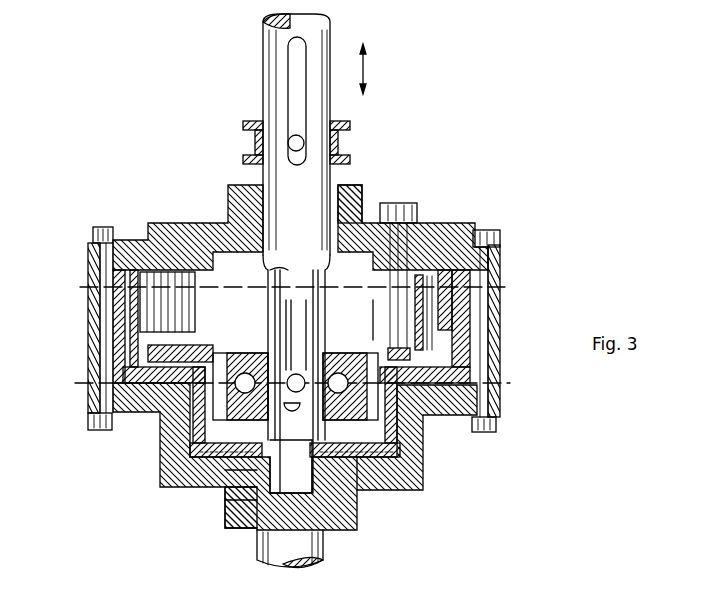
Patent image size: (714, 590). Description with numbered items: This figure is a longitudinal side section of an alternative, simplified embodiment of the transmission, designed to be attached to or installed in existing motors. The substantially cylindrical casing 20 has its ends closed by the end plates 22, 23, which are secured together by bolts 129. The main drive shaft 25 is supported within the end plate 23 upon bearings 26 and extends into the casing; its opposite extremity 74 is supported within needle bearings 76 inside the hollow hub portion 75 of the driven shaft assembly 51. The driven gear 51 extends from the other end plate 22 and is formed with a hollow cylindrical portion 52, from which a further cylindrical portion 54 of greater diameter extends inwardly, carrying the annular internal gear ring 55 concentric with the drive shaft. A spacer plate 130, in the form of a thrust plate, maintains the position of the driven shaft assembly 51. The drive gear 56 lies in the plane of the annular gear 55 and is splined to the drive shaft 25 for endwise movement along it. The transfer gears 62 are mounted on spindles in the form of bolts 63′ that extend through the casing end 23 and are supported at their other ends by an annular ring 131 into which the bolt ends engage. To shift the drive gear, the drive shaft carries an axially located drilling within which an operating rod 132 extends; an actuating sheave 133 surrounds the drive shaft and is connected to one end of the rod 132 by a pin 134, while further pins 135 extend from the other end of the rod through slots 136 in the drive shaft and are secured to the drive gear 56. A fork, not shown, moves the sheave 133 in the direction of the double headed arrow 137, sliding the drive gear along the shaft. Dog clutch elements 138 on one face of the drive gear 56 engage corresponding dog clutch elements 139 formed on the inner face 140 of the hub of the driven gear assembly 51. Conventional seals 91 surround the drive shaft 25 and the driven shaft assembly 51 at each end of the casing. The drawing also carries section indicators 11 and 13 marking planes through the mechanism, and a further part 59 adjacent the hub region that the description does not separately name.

The section line 11- 11 is at (75, 383).
The section line 13- 13 is at (80, 287).
The casing 20 is at (494, 415).
The end plate 22 is at (437, 420).
The end plate 23 is at (445, 250).
The main drive shaft 25 is at (263, 100).
The bearings 26 is at (238, 215).
The driven gear 51 is at (290, 549).
The hollow cylindrical portion 52 is at (318, 478).
The further cylindrical portion 54 is at (463, 303).
The annular internal gear ring 55 is at (482, 262).
The drive gear 56 is at (247, 373).
The lower boss 59 is at (245, 500).
The second set of transfer gears 62 is at (372, 322).
The bolt 63' is at (403, 264).
The extremity of the drive shaft 74 is at (313, 490).
The hollow hub portion 75 is at (235, 475).
The needle bearings 76 is at (240, 495).
The seals 91 is at (343, 190).
The bolts 129 is at (497, 432).
The spacer plate 130 is at (380, 462).
The annular ring 131 is at (300, 75).
The operating rod 132 is at (303, 318).
The actuating sheave 133 is at (252, 150).
The pin 134 is at (290, 142).
The pins 135 is at (287, 373).
The slots 136 is at (303, 265).
The double headed arrow 137 is at (366, 70).
The dog clutch elements 138 is at (400, 470).
The dog clutch elements 139 is at (355, 458).
The inner face 140 is at (215, 462).